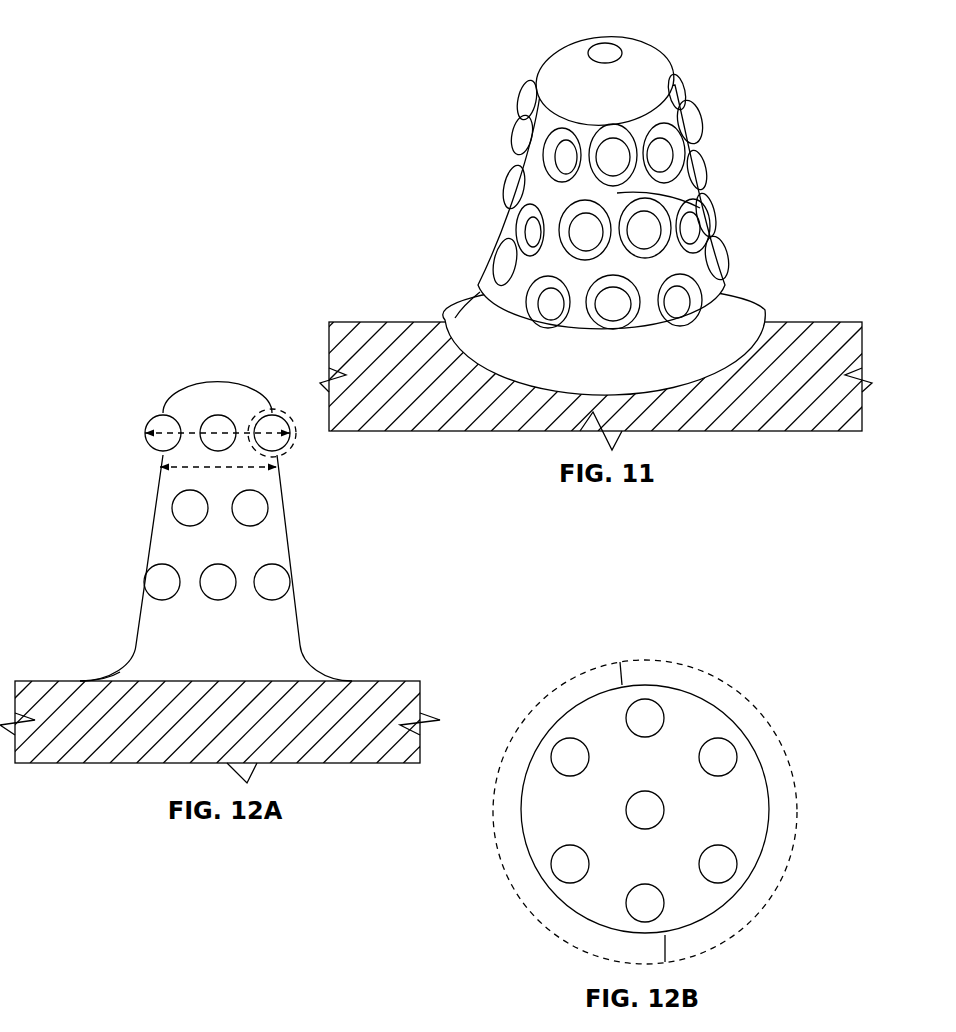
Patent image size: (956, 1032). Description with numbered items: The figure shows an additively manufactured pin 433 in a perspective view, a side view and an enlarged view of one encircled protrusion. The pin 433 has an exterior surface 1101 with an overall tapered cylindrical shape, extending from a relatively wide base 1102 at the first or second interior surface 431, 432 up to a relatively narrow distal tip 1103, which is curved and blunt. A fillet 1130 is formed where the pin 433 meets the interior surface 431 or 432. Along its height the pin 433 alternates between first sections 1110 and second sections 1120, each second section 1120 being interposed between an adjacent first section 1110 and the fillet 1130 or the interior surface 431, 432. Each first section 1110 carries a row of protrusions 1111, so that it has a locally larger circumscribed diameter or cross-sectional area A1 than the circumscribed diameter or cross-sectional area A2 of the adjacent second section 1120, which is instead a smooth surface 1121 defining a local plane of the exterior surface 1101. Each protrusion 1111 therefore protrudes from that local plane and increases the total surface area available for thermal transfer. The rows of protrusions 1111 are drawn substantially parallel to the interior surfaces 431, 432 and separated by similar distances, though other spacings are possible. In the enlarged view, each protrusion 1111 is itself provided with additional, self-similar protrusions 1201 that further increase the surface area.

In FIG. 11, the first interior surface 431 is at (586, 350).
In FIG. 12A, the first interior surface 431 is at (242, 694).
In FIG. 11, the second interior surface 432 is at (350, 322).
In FIG. 12A, the second interior surface 432 is at (410, 681).
In FIG. 11, the pin 433 is at (650, 56).
In FIG. 12A, the pin 433 is at (178, 398).
In FIG. 11, the exterior surface 1101 is at (525, 258).
In FIG. 11, the base 1102 is at (448, 312).
In FIG. 11, the distal tip 1103 is at (595, 50).
In FIG. 11, the first section 1110 is at (520, 108).
In FIG. 11, the protrusion 1111 is at (702, 170).
In FIG. 12A, the protrusion 1111 is at (172, 507).
In FIG. 12B, the protrusion 1111 is at (530, 863).
In FIG. 11, the second section 1120 is at (540, 165).
In FIG. 11, the smooth surface 1121 is at (690, 212).
In FIG. 12A, the smooth surface 1121 is at (155, 545).
In FIG. 11, the fillet 1130 is at (480, 290).
In FIG. 12A, the fillet 1130 is at (315, 668).
In FIG. 12B, the self-similar protrusion 1201 is at (663, 705).
In FIG. 12A, the cross-sectional area A1 is at (278, 410).
In FIG. 12A, the cross-sectional area A2 is at (233, 467).